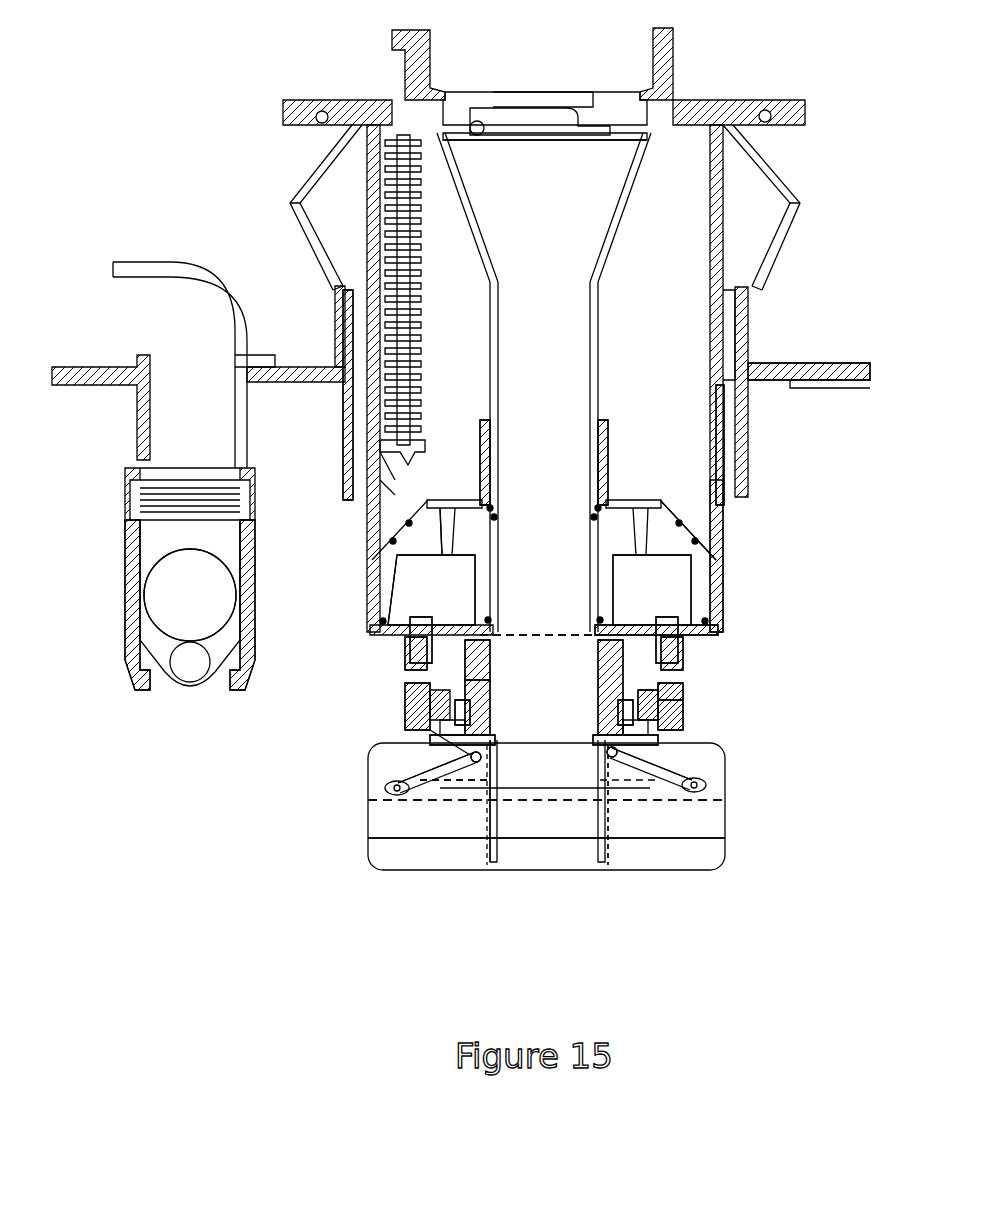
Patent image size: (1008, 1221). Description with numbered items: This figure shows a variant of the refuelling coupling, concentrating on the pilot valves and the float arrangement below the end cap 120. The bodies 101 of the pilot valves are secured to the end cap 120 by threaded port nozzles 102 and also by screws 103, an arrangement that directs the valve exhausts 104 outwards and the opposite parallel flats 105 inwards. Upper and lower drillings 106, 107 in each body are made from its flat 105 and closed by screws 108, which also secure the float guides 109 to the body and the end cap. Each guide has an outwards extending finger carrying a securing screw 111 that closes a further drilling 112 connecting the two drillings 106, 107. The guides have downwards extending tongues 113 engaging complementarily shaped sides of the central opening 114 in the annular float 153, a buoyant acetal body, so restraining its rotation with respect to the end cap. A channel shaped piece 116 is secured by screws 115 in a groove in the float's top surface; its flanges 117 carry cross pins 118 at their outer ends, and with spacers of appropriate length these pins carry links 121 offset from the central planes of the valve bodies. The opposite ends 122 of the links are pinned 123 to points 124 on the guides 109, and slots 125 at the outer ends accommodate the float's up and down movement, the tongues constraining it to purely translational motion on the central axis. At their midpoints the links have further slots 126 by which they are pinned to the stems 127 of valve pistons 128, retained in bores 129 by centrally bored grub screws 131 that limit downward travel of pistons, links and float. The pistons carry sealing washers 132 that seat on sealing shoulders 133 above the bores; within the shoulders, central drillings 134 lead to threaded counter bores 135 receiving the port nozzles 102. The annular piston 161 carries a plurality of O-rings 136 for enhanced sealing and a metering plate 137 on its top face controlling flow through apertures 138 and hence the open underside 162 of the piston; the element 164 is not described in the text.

The body 101 is at (698, 650).
The threaded port nozzle 102 is at (680, 632).
The screw 103 is at (690, 560).
The valve exhaust 104 is at (678, 680).
The parallel flat 105 is at (598, 672).
The upper drilling 106 is at (490, 663).
The lower drilling 107 is at (470, 710).
The screw 108 is at (600, 742).
The float guide 109 is at (615, 744).
The securing screw 111 is at (640, 746).
The further drilling 112 is at (490, 688).
The tongue 113 is at (602, 862).
The central opening 114 is at (518, 855).
The screw 115 is at (640, 800).
The channel shaped piece 116 is at (542, 801).
The flange 117 is at (400, 774).
The cross pin 118 is at (393, 787).
The end cap 120 is at (388, 642).
The link 121 is at (670, 784).
The opposite end 122 is at (432, 735).
The pin 123 is at (470, 756).
The point 124 is at (500, 745).
The slot 125 is at (455, 757).
The further slot 126 is at (470, 758).
The stem 127 is at (628, 735).
The valve piston 128 is at (683, 702).
The bore 129 is at (410, 680).
The grub screw 131 is at (412, 705).
The sealing washer 132 is at (432, 675).
The sealing shoulder 133 is at (692, 668).
The central drilling 134 is at (692, 628).
The threaded counter bore 135 is at (487, 633).
The O-ring 136 is at (700, 528).
The metering plate 137 is at (482, 490).
The aperture 138 is at (464, 498).
The annular float 153 is at (385, 826).
The annular piston 161 is at (632, 498).
The open underside 162 is at (652, 590).
The wall 164 is at (700, 500).